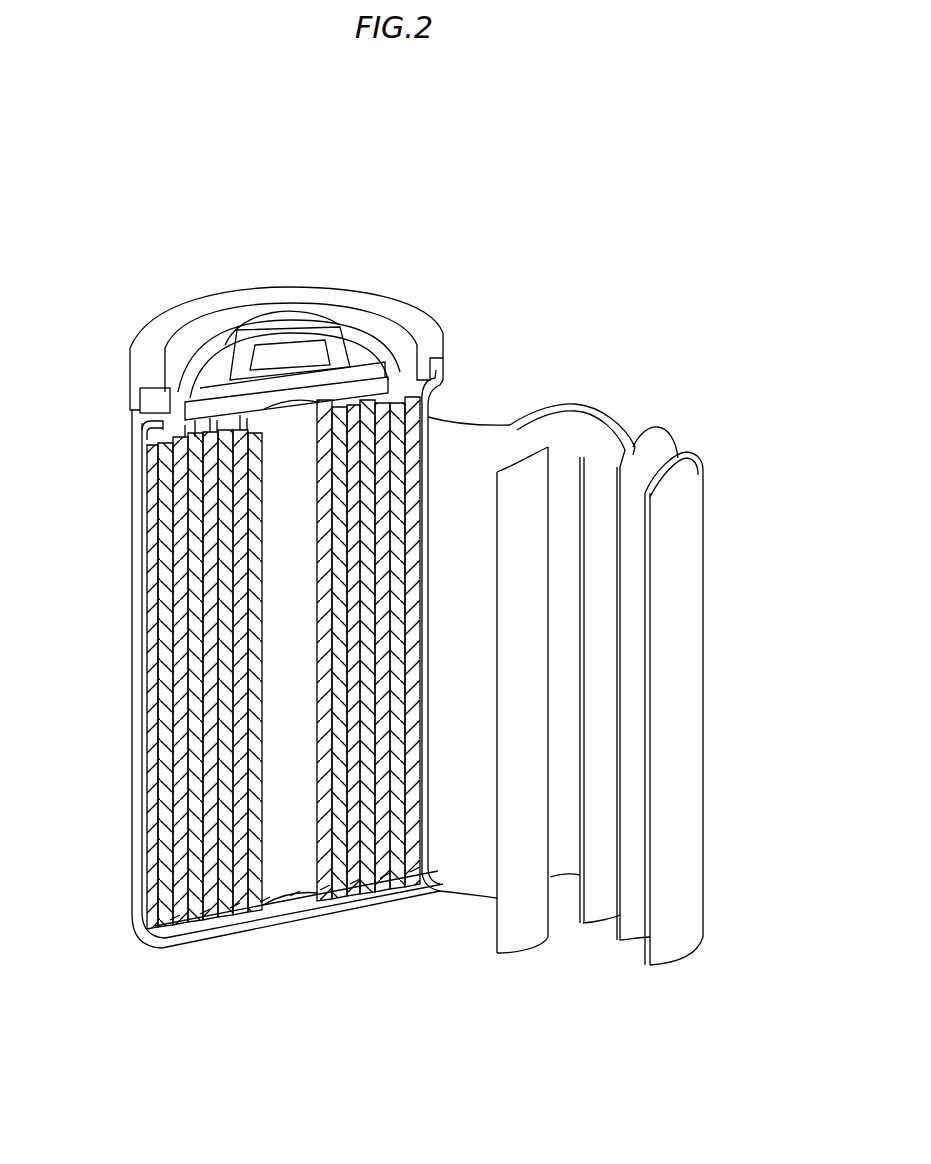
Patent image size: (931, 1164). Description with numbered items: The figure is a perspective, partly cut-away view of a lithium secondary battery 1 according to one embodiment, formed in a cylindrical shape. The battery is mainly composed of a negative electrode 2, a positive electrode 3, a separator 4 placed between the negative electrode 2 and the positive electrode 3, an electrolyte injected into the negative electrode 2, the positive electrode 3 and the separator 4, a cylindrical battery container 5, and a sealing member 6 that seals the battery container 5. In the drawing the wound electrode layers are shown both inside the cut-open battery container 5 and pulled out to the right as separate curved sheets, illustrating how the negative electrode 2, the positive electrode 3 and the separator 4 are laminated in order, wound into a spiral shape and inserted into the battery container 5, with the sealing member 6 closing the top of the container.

The lithium secondary battery 1 is at (679, 371).
The negative electrode 2 is at (687, 565).
The positive electrode 3 is at (597, 465).
The separator 4 is at (653, 468).
The battery container 5 is at (133, 872).
The sealing member 6 is at (300, 320).